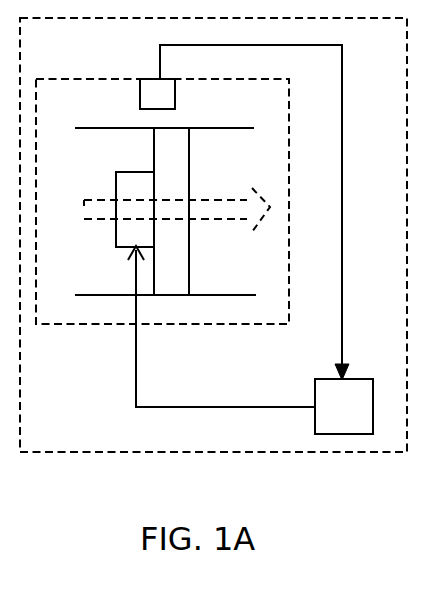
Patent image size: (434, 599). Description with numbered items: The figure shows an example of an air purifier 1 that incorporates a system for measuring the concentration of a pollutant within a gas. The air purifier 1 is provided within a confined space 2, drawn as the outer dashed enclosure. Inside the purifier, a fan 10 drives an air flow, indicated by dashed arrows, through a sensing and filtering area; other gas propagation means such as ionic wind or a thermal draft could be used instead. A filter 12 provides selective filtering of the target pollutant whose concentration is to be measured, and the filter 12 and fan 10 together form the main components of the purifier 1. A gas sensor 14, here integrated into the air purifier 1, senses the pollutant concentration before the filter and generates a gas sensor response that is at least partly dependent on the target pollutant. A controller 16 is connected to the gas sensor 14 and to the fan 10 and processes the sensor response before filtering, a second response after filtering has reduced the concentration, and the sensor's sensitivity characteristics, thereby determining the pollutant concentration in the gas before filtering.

The air purifier 1 is at (289, 146).
The confined space 2 is at (340, 446).
The fan 10 is at (116, 185).
The filter 12 is at (189, 148).
The gas sensor 14 is at (161, 78).
The controller 16 is at (315, 381).